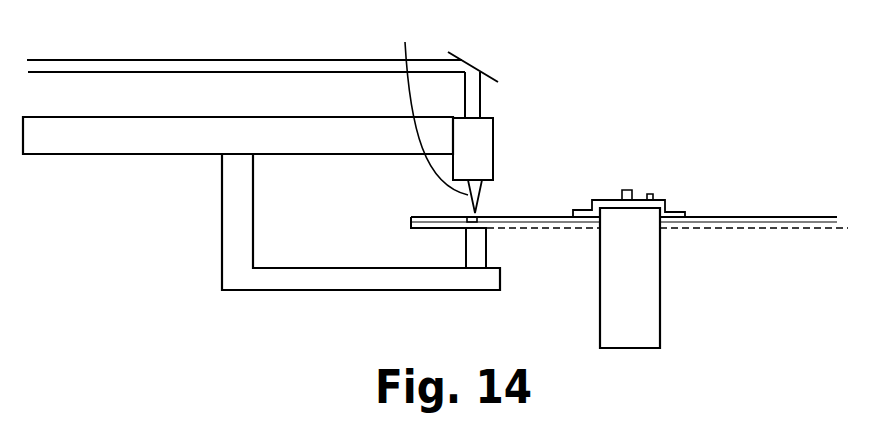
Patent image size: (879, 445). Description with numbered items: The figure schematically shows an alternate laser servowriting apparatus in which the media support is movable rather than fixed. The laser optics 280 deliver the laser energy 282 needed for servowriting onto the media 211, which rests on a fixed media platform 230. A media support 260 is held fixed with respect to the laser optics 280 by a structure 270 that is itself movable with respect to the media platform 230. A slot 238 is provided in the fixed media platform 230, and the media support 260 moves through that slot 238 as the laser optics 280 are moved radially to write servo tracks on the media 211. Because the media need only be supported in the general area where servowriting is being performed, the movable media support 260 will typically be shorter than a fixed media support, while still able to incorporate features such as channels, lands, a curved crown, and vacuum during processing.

The structure 270 is at (233, 247).
The laser optics 280 is at (477, 137).
The laser energy 282 is at (397, 67).
The media 211 is at (717, 218).
The media platform 230 is at (735, 231).
The slot 238 is at (543, 228).
The media support 260 is at (473, 217).